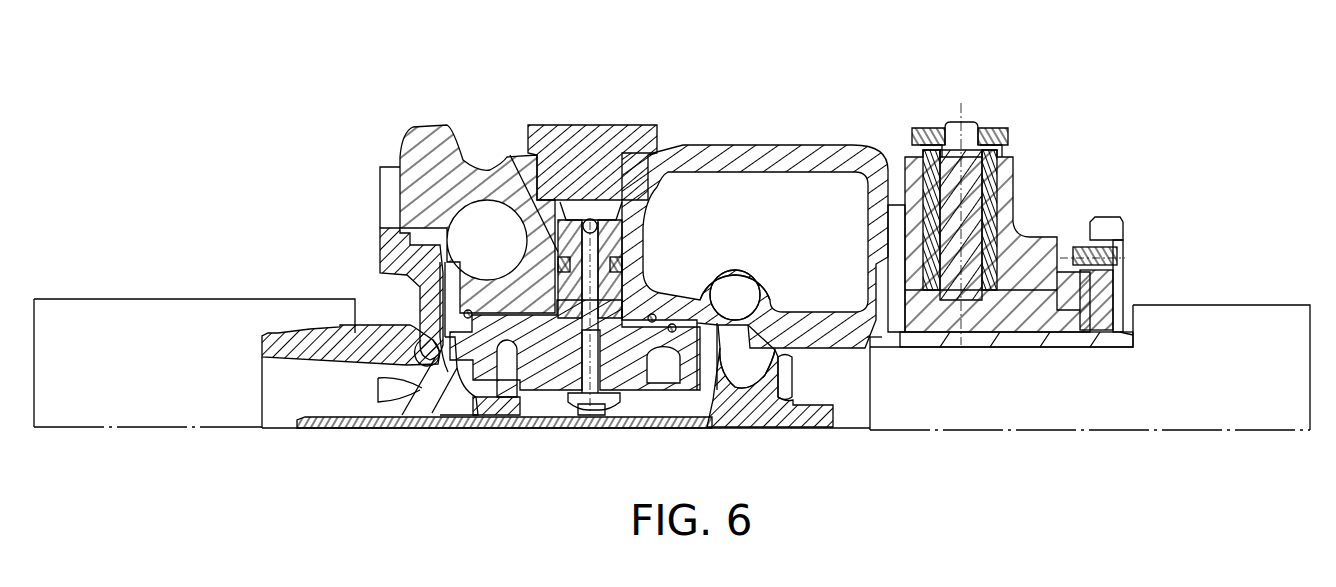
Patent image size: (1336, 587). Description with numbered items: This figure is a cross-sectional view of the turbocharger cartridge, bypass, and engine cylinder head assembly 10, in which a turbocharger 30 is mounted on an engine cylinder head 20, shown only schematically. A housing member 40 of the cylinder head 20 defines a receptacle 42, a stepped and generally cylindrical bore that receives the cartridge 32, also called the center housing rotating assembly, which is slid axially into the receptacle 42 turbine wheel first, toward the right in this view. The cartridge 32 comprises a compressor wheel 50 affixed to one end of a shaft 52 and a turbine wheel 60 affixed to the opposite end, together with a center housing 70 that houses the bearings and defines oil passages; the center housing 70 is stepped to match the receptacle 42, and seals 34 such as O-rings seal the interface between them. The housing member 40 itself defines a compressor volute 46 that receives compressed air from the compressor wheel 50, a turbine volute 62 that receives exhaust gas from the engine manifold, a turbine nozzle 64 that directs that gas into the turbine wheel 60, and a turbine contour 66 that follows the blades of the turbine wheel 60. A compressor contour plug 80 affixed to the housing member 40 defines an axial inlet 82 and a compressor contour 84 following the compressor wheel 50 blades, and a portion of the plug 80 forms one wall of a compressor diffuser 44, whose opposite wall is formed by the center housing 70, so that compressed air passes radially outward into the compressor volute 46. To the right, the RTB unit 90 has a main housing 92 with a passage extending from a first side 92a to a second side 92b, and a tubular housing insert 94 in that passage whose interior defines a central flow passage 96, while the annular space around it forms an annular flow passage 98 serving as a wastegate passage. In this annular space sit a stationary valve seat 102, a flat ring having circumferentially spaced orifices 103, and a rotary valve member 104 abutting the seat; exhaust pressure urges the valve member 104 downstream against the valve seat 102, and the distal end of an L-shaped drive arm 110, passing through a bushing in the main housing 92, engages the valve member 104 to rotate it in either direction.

The turbocharger cartridge, bypass, and engine cylinder head assembly 10 is at (995, 95).
The engine cylinder head 20 is at (1290, 320).
The turbocharger 30 is at (665, 122).
The cartridge 32 is at (530, 440).
The seals 34 is at (468, 313).
The housing member 40 is at (753, 150).
The receptacle 42 is at (533, 318).
The compressor diffuser 44 is at (432, 272).
The compressor volute 46 is at (494, 218).
The compressor wheel 50 is at (405, 383).
The shaft 52 is at (447, 424).
The turbine wheel 60 is at (745, 406).
The turbine volute 62 is at (735, 287).
The turbine nozzle 64 is at (735, 333).
The turbine contour 66 is at (753, 355).
The center housing 70 is at (537, 357).
The compressor contour plug 80 is at (333, 346).
The axial inlet 82 is at (293, 373).
The compressor contour 84 is at (436, 366).
The RTB unit 90 is at (1075, 222).
The main housing 92 is at (1027, 253).
The first side 92a is at (902, 282).
The second side 92b is at (1122, 230).
The housing insert 94 is at (1057, 340).
The central flow passage 96 is at (1115, 360).
The annular flow passage 98 is at (1018, 323).
The stationary valve seat 102 is at (1117, 253).
The orifices 103 is at (1122, 298).
The rotary valve member 104 is at (1100, 285).
The drive arm 110 is at (998, 305).